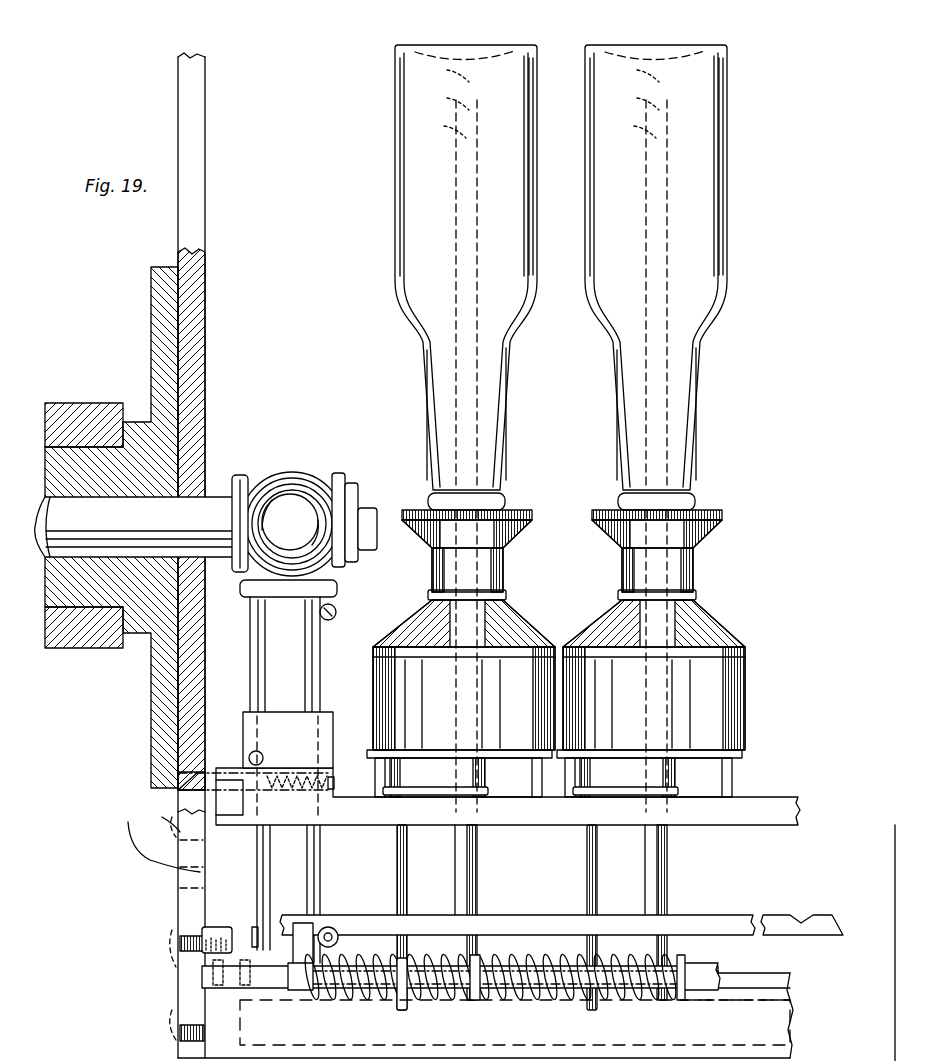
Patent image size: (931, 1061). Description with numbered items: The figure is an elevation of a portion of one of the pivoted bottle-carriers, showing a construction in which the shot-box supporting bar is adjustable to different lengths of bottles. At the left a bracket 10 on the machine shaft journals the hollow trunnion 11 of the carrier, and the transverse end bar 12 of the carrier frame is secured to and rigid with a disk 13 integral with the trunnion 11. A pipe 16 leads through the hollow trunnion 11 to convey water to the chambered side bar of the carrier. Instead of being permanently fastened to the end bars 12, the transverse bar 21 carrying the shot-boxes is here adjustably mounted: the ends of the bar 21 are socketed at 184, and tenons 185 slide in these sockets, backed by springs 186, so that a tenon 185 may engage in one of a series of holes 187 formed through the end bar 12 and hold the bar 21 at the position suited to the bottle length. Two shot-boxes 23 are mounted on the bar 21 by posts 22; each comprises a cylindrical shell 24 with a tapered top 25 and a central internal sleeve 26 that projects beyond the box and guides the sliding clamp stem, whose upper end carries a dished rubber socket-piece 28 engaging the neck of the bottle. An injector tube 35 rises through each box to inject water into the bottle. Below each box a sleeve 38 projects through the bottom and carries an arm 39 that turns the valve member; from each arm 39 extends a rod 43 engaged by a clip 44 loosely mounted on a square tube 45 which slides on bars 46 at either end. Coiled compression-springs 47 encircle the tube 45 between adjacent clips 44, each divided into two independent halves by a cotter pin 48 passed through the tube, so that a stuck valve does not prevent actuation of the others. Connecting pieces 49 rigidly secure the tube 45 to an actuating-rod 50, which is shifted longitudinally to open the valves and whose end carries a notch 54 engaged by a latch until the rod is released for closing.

The bracket 10 is at (127, 394).
The hollow trunnion 11 is at (68, 648).
The end bar 12 is at (210, 380).
The disk 13 is at (158, 705).
The pipe 16 is at (211, 505).
The transverse bar 21 is at (526, 815).
The post 22 is at (388, 778).
The shot-box 23 is at (576, 698).
The cylindrical shell 24 is at (742, 720).
The tapered top 25 is at (527, 619).
The internal sleeve 26 is at (504, 578).
The rubber socket-piece 28 is at (512, 540).
The injector tube 35 is at (479, 884).
The sleeve 38 is at (478, 777).
The arm 39 is at (433, 791).
The rod 43 is at (396, 877).
The clip 44 is at (407, 1003).
The square tube 45 is at (335, 1000).
The bar 46 is at (277, 982).
The coiled compression-spring 47 is at (344, 992).
The cotter pin 48 is at (515, 998).
The connecting piece 49 is at (297, 948).
The actuating-rod 50 is at (507, 923).
The notch 54 is at (808, 916).
The socket 184 is at (280, 795).
The tenon 185 is at (207, 773).
The spring 186 is at (292, 772).
The hole 187 is at (162, 835).